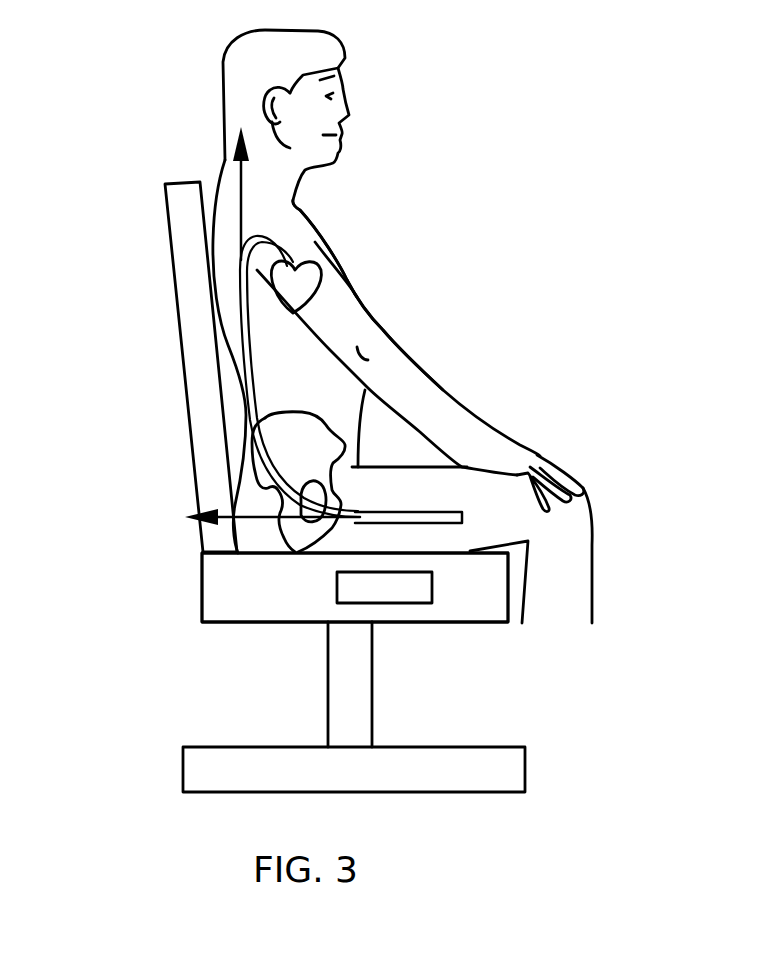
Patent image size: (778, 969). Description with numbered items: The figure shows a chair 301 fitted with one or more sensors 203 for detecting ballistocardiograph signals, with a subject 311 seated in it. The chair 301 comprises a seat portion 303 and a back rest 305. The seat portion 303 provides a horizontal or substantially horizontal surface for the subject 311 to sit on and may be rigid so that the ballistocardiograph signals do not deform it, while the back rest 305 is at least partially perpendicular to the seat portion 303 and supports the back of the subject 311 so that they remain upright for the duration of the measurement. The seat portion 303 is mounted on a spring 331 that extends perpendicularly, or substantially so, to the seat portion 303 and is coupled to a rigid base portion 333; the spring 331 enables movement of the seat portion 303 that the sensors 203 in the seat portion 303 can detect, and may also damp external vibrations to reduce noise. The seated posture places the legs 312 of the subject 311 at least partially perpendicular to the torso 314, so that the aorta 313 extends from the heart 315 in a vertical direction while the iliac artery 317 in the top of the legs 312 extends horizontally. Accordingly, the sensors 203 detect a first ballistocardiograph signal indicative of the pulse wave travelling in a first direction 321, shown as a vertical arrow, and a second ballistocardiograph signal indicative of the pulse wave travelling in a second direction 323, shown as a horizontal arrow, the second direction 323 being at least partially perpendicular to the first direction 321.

The sensors 203 is at (363, 595).
The chair 301 is at (250, 623).
The seat portion 303 is at (488, 612).
The back rest 305 is at (190, 418).
The subject 311 is at (313, 219).
The legs 312 is at (382, 477).
The aorta 313 is at (260, 368).
The torso 314 is at (355, 277).
The heart 315 is at (322, 273).
The iliac artery 317 is at (440, 502).
The first direction 321 is at (240, 197).
The second direction 323 is at (245, 518).
The spring 331 is at (357, 695).
The rigid base portion 333 is at (458, 763).